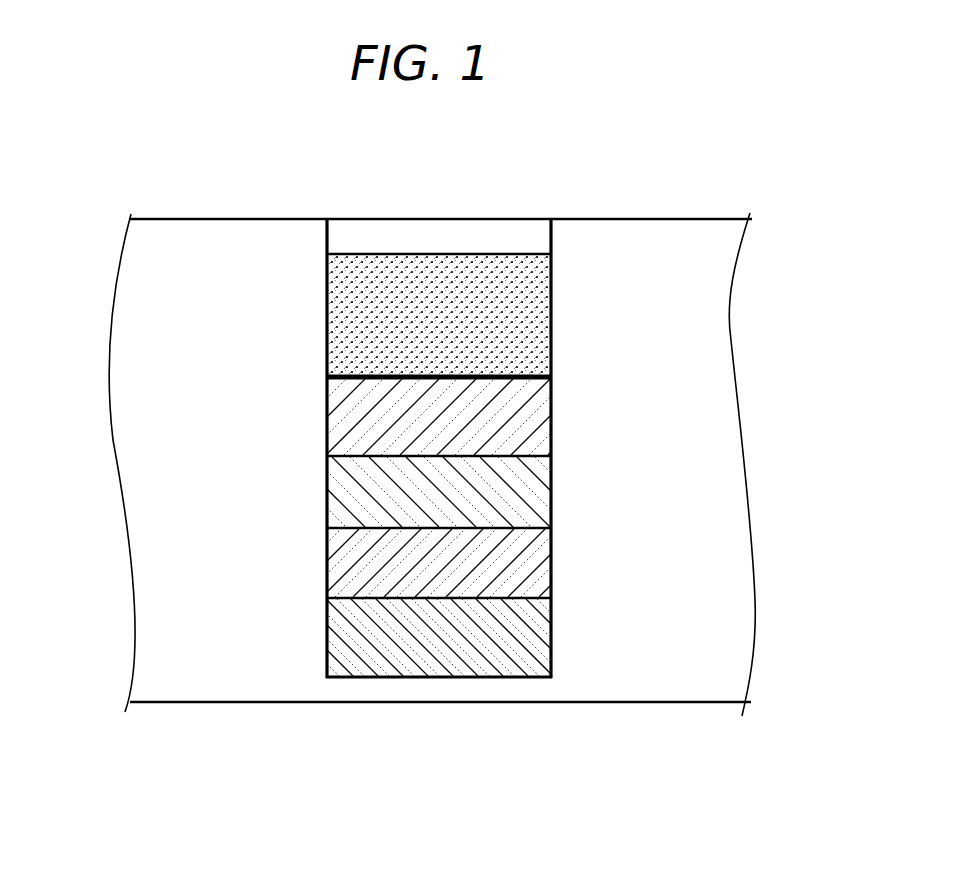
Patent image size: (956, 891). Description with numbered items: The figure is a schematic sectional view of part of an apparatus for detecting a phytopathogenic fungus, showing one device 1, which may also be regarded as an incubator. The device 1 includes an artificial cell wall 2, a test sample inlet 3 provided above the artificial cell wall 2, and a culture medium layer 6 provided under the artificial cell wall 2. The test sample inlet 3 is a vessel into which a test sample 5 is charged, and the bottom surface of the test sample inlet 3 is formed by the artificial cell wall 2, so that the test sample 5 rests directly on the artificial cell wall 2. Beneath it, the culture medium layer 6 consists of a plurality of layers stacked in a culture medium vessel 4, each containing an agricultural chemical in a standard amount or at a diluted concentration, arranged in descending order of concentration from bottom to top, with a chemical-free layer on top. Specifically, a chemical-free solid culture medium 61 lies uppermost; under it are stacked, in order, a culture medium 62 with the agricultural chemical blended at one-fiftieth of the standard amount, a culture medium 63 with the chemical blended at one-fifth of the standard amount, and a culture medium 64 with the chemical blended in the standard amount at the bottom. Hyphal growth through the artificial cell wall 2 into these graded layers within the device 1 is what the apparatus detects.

The device 1 is at (280, 163).
The artificial cell wall 2 is at (391, 377).
The test sample inlet 3 is at (552, 307).
The culture medium vessel 4 is at (447, 679).
The test sample 5 is at (432, 283).
The culture medium layer 6 is at (446, 528).
The chemical-free culture medium layer 61 is at (541, 421).
The culture medium layer with agricultural chemical blended in amount 1/50 standard 62 is at (541, 496).
The culture medium layer with agricultural chemical blended in amount 1/5 standard a 63 is at (541, 569).
The culture medium layer with agricultural chemical blended in standard amount 64 is at (541, 645).